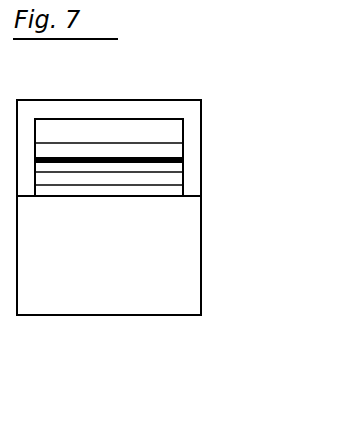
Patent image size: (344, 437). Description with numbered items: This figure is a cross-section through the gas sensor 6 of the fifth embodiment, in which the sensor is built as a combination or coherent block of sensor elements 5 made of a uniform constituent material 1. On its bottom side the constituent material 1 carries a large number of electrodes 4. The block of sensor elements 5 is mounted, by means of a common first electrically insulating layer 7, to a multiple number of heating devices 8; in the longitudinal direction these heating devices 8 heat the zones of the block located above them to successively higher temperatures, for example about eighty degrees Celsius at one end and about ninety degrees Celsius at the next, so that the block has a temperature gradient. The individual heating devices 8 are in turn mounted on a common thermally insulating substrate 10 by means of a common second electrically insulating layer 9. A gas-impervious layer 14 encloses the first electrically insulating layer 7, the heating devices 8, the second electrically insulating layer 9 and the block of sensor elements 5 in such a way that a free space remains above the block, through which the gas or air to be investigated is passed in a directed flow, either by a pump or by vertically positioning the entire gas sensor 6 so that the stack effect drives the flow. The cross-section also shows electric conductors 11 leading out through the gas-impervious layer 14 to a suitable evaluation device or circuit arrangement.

The uniform constituent material 1 is at (48, 150).
The electrodes 4 is at (72, 164).
The block of sensor elements 5 is at (141, 138).
The gas sensor 6 is at (115, 415).
The common first electrically insulating layer 7 is at (98, 170).
The heating devices 8 is at (123, 177).
The common second electrically insulating layer 9 is at (148, 190).
The thermally insulating substrate 10 is at (169, 244).
The electric conductors 11 is at (184, 160).
The gas-impervious layer 14 is at (164, 110).